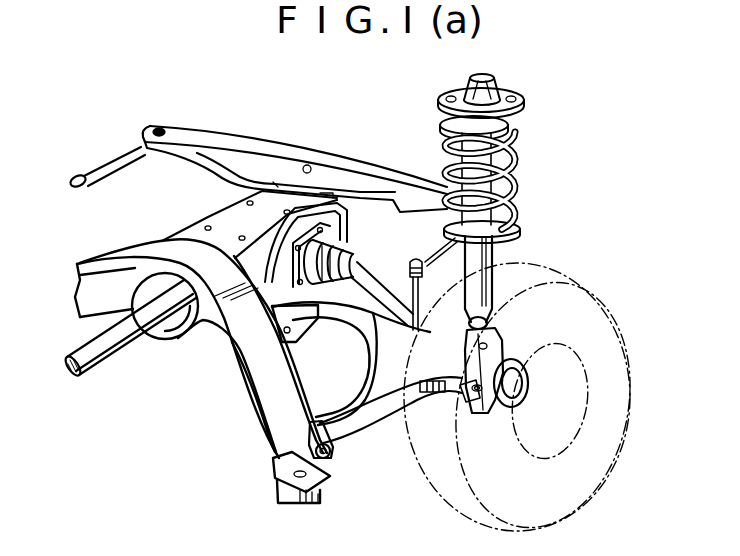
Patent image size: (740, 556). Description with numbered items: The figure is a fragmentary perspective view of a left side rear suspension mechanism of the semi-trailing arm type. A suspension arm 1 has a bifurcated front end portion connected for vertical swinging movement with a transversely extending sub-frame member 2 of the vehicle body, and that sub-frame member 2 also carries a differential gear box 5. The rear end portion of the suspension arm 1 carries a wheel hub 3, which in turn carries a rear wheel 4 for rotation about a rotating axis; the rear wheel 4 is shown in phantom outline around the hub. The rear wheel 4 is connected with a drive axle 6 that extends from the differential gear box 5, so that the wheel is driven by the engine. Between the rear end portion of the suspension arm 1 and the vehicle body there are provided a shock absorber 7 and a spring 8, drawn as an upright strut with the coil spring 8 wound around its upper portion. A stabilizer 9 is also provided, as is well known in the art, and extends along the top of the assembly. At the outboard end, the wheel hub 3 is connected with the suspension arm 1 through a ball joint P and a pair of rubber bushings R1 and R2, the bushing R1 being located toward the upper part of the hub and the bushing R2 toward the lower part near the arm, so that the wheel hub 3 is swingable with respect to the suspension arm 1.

The suspension arm 1 is at (356, 420).
The sub-frame member 2 is at (267, 387).
The wheel hub 3 is at (517, 380).
The rear wheel 4 is at (606, 272).
The differential gear box 5 is at (220, 215).
The drive axle 6 is at (377, 287).
The shock absorber 7 is at (503, 253).
The spring 8 is at (520, 182).
The stabilizer 9 is at (235, 178).
The rubber bushing R1 is at (502, 333).
The rubber bushing R2 is at (461, 403).
The ball joint P is at (484, 420).